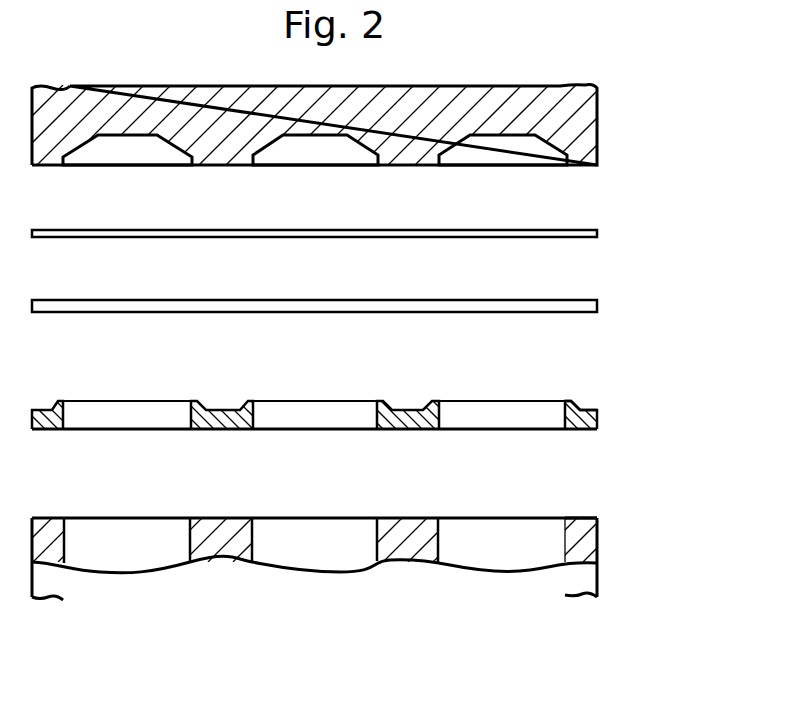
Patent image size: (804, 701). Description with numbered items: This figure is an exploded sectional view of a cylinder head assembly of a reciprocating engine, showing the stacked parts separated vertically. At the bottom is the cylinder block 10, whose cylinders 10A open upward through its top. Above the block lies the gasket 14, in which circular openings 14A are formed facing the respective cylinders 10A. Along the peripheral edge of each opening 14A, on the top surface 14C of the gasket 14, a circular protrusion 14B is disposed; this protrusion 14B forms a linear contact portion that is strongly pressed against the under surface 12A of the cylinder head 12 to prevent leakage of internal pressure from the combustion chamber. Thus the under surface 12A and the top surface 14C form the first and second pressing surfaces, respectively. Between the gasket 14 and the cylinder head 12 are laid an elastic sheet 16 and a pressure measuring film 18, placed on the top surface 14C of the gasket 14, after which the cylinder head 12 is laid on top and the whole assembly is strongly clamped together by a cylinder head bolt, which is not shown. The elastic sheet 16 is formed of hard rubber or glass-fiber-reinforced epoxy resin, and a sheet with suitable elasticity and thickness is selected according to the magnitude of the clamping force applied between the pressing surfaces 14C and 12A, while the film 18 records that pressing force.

The cylinder block 10 is at (597, 540).
The cylinder 10A is at (563, 535).
The cylinder head 12 is at (597, 130).
The under surface 12A is at (578, 166).
The gasket 14 is at (597, 418).
The circular opening 14A is at (520, 422).
The circular protrusion 14B is at (575, 403).
The top surface 14C is at (407, 410).
The elastic sheet 16 is at (597, 308).
The pressure measuring film 18 is at (597, 233).